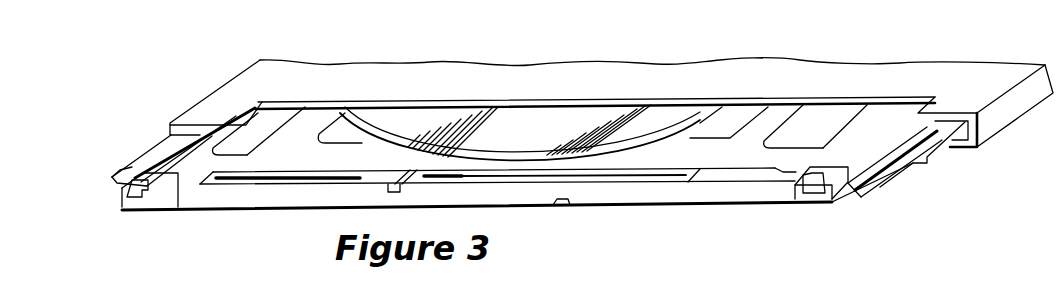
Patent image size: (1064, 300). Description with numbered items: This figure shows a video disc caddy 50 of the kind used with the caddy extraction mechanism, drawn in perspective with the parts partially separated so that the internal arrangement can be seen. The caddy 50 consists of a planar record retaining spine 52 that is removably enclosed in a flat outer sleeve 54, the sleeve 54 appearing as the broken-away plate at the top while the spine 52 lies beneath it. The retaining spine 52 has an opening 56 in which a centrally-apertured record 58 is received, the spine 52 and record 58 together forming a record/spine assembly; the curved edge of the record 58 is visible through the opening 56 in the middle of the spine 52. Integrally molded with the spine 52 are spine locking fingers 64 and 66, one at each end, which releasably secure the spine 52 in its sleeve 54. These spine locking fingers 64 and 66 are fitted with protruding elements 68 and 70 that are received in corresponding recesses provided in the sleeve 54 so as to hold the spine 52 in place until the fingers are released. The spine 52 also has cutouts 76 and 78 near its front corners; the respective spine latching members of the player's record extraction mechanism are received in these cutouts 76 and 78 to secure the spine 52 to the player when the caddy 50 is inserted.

The caddy 50 is at (918, 36).
The record retaining spine 52 is at (708, 202).
The outer sleeve 54 is at (767, 62).
The opening 56 is at (344, 128).
The record 58 is at (648, 126).
The spine locking finger 64 is at (162, 157).
The spine locking finger 66 is at (887, 177).
The protruding element 68 is at (132, 167).
The protruding element 70 is at (930, 165).
The cutout 76 is at (178, 175).
The cutout 78 is at (790, 167).